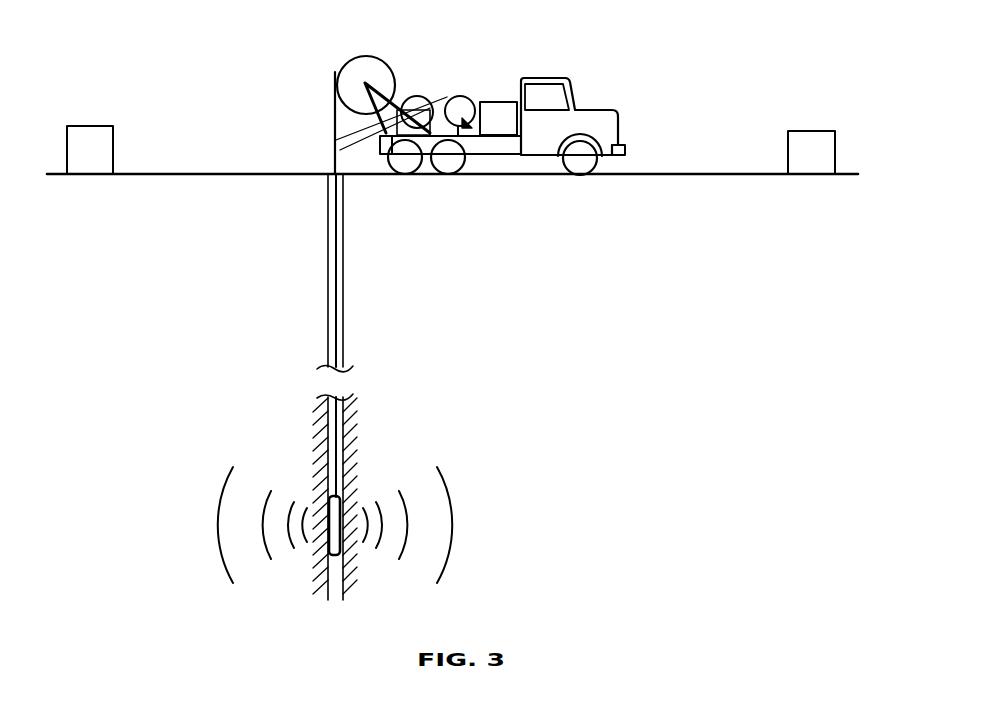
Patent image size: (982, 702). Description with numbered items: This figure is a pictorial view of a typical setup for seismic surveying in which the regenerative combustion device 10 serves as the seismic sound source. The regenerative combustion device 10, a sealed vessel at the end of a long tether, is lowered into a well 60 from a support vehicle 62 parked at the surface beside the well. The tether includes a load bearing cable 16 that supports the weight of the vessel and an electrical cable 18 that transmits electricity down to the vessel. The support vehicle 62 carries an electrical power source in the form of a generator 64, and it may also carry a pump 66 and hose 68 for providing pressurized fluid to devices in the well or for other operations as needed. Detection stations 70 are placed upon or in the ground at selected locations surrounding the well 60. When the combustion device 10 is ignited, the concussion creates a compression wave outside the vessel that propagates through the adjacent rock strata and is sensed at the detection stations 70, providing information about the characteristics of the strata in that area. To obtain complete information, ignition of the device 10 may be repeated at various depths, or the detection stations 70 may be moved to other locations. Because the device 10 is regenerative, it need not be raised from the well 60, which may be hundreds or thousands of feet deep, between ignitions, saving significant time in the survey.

The regenerative combustion device 10 is at (343, 498).
The load bearing cable 16 is at (335, 123).
The electrical cable 18 is at (350, 113).
The well 60 is at (332, 258).
The support vehicle 62 is at (568, 73).
The generator 64 is at (493, 103).
The pump 66 is at (410, 130).
The hose 68 is at (336, 107).
The detection stations 70 is at (95, 133).